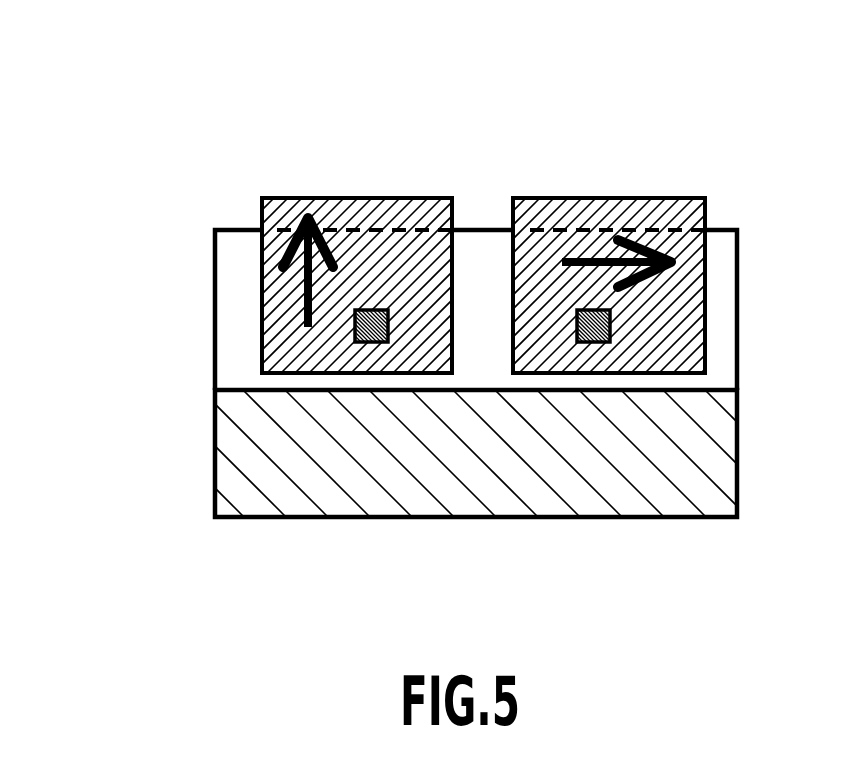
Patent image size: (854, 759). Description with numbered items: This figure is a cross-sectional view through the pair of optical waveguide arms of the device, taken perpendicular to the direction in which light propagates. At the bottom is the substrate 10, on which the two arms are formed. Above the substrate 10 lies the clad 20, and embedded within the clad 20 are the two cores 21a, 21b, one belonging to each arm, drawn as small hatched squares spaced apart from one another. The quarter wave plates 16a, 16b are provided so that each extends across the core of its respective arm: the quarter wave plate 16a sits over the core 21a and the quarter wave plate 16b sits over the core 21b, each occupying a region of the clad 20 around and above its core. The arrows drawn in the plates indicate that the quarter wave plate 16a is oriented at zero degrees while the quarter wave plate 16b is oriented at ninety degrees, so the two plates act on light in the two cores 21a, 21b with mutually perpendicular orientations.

The substrate 10 is at (248, 518).
The clad 20 is at (225, 343).
The quarter wave plate 16a is at (357, 198).
The quarter wave plate 16b is at (612, 198).
The core 21a is at (372, 342).
The core 21b is at (593, 342).